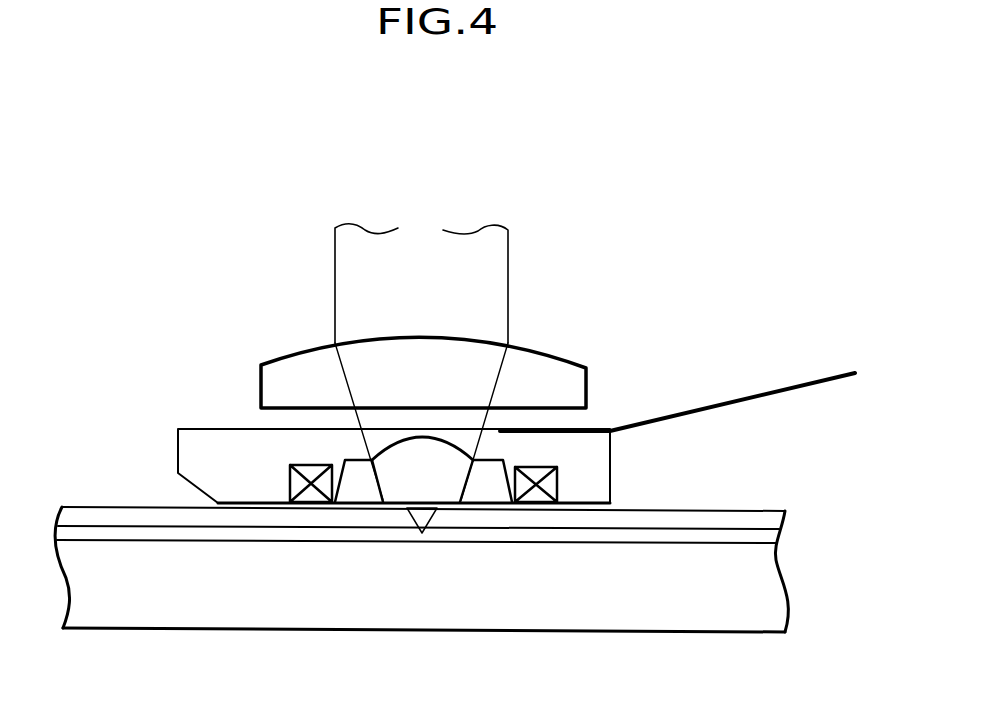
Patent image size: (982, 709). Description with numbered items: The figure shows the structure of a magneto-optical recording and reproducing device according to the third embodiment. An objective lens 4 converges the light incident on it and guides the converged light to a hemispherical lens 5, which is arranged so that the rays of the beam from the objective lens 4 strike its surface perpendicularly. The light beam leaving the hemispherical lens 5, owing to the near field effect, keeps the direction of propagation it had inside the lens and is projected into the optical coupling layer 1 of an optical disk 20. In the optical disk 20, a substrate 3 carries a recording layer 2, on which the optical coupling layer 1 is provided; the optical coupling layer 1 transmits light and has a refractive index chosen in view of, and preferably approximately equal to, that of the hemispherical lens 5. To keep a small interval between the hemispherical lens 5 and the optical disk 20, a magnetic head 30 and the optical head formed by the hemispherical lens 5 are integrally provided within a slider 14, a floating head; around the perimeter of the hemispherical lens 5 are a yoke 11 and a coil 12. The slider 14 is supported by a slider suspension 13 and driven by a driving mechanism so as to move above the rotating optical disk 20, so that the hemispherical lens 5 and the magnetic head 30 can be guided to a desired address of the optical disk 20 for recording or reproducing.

The optical coupling layer 1 is at (640, 520).
The recording layer 2 is at (673, 537).
The substrate 3 is at (470, 525).
The objective lens 4 is at (520, 365).
The hemispherical lens 5 is at (422, 453).
The yoke 11 is at (500, 462).
The coil 12 is at (558, 466).
The slider suspension 13 is at (797, 385).
The slider 14 is at (237, 443).
The optical disk 20 is at (459, 543).
The magnetic head 30 is at (268, 479).